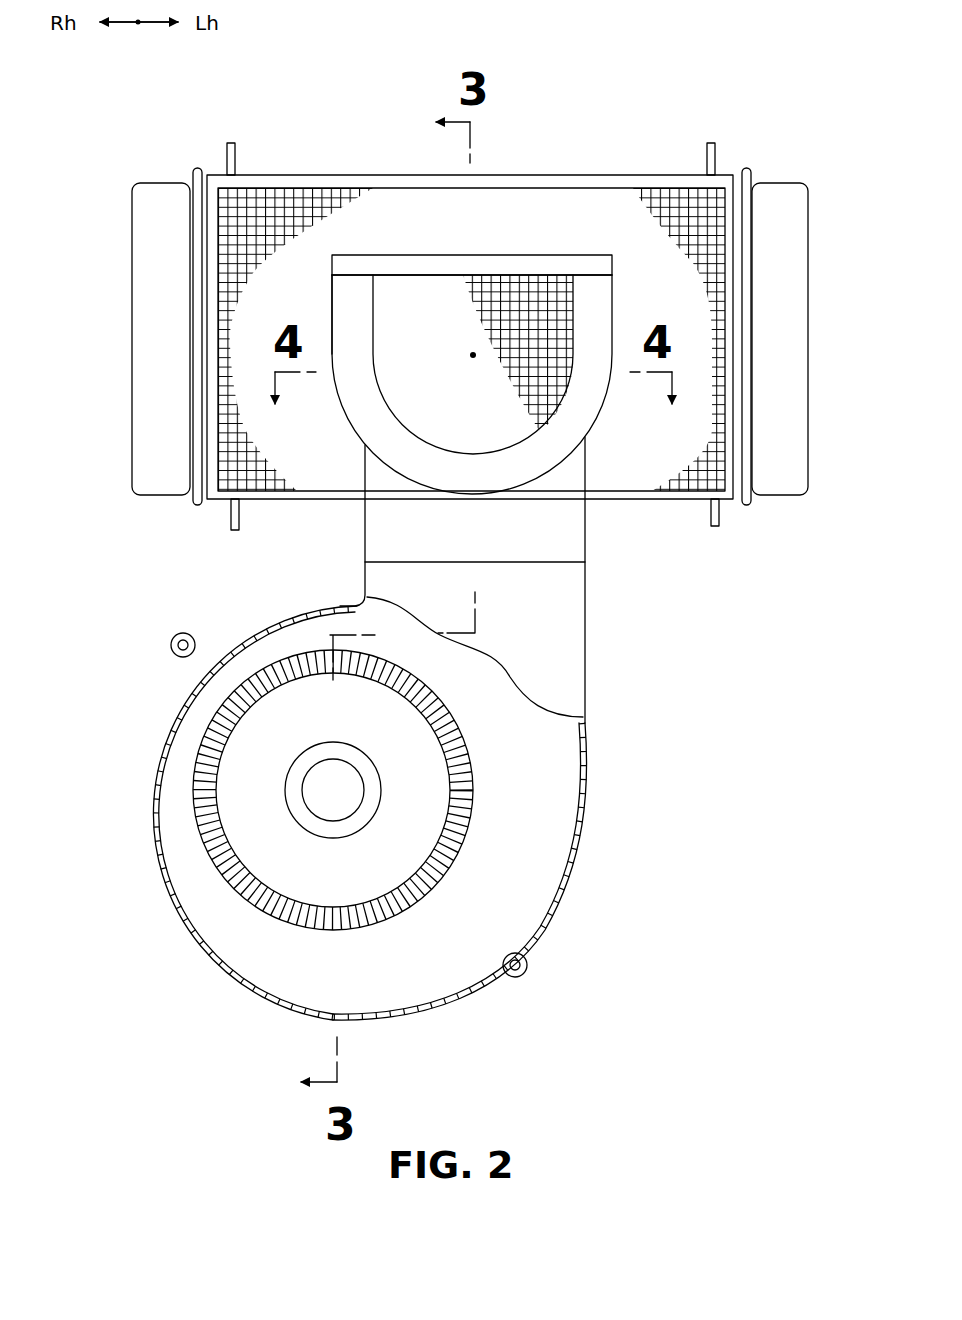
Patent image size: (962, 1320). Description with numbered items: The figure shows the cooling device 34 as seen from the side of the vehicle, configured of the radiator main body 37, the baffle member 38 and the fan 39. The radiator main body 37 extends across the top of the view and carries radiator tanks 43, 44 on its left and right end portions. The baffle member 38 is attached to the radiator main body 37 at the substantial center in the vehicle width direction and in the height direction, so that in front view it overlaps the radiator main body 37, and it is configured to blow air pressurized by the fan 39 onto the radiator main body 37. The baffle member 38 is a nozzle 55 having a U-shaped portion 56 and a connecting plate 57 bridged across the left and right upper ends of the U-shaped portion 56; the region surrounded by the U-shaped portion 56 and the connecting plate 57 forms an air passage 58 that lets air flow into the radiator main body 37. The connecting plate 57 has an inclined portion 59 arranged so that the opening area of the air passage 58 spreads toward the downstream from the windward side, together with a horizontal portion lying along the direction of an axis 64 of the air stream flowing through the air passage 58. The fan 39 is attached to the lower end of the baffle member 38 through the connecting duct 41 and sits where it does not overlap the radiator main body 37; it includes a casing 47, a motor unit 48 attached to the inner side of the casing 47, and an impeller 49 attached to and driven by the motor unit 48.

The cooling device 34 is at (472, 277).
The radiator main body 37 is at (572, 210).
The radiator tank 43 is at (775, 205).
The radiator tank 44 is at (165, 215).
The baffle member 38 is at (515, 351).
The nozzle 55 is at (515, 351).
The U-shaped portion 56 is at (363, 417).
The connecting plate 57 is at (346, 245).
The air passage 58 is at (373, 313).
The inclined portion 59 is at (377, 263).
The axis 64 is at (473, 355).
The connecting duct 41 is at (545, 523).
The fan 39 is at (400, 852).
The casing 47 is at (402, 1022).
The motor unit 48 is at (300, 818).
The impeller 49 is at (413, 905).